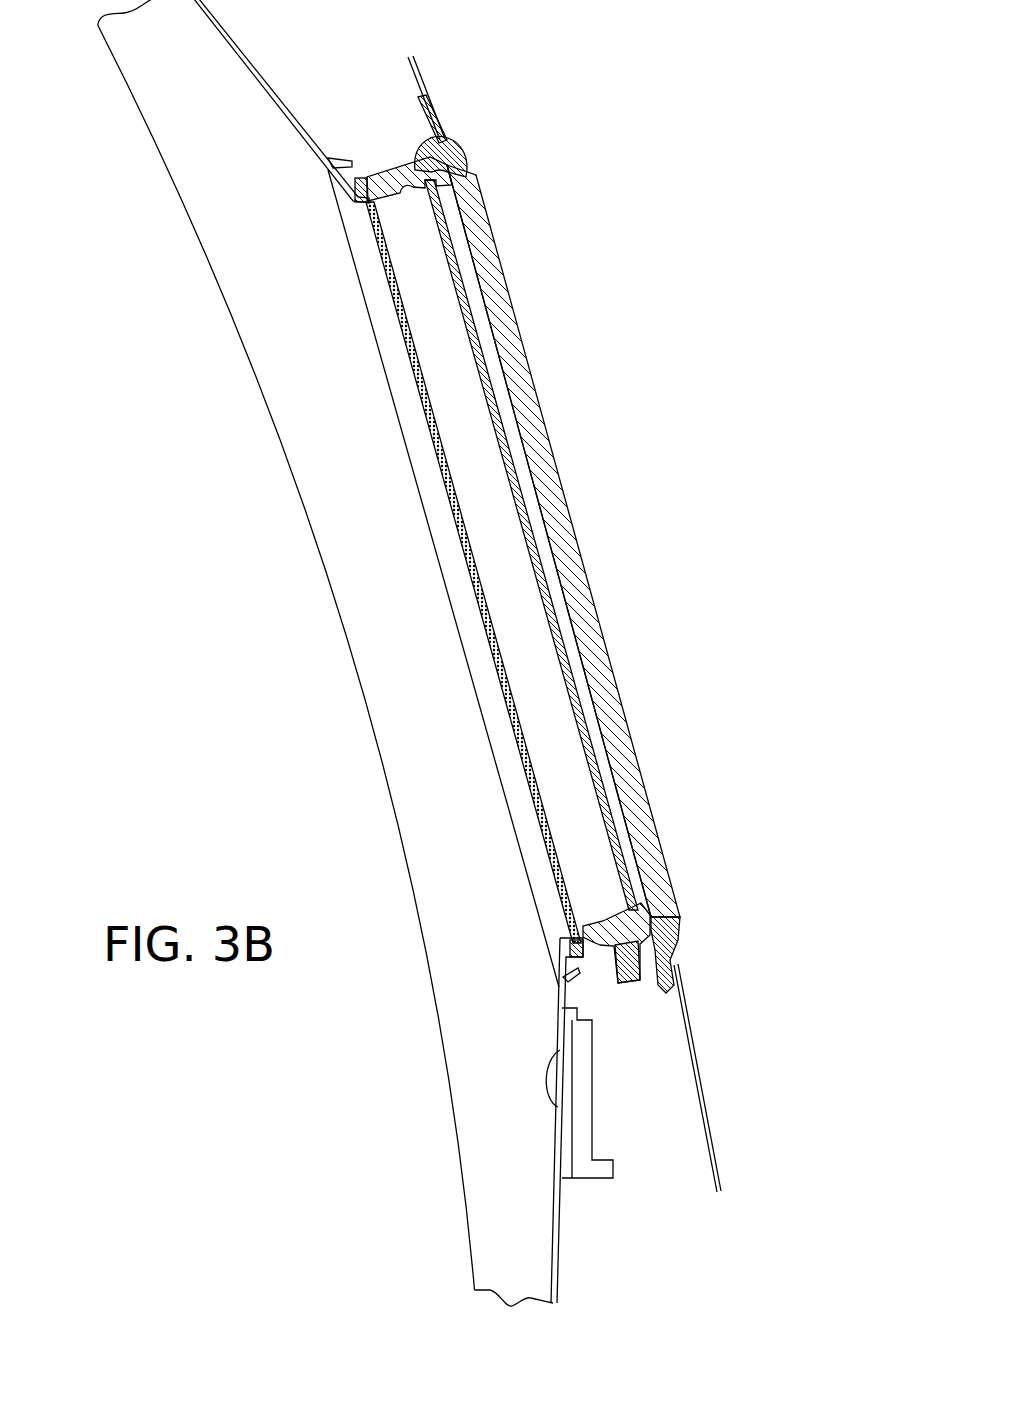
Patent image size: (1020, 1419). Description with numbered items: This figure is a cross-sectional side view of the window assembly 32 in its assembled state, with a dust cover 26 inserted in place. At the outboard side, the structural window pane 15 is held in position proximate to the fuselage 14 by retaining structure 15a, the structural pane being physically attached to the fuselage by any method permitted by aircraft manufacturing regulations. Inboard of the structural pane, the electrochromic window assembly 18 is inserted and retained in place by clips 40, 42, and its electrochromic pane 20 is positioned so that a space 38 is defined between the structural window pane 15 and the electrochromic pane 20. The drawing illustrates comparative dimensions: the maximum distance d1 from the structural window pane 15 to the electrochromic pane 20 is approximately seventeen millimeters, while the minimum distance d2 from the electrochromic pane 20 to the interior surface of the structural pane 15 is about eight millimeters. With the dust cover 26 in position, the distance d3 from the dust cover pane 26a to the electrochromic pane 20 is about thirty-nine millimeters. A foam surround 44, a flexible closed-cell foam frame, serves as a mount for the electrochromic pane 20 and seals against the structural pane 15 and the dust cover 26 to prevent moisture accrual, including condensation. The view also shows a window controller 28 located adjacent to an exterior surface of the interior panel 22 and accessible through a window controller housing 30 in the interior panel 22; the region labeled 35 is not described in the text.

The fuselage 14 is at (425, 70).
The structural window pane 15 is at (487, 253).
The retaining structure 15a is at (465, 152).
The electrochromic window assembly 18 is at (410, 461).
The electrochromic pane 20 is at (553, 623).
The interior panel 22 is at (304, 127).
The dust cover 26 is at (442, 583).
The dust cover pane 26a is at (383, 265).
The window controller 28 is at (566, 1086).
The window controller housing 30 is at (553, 1063).
The window assembly 32 is at (610, 402).
The gap 35 is at (565, 835).
The space 38 is at (497, 337).
The clip 40 is at (359, 178).
The clip 42 is at (586, 968).
The foam surround 44 is at (440, 138).
The maximum distance d1 is at (480, 515).
The minimum distance d2 is at (587, 867).
The distance d3 is at (510, 267).